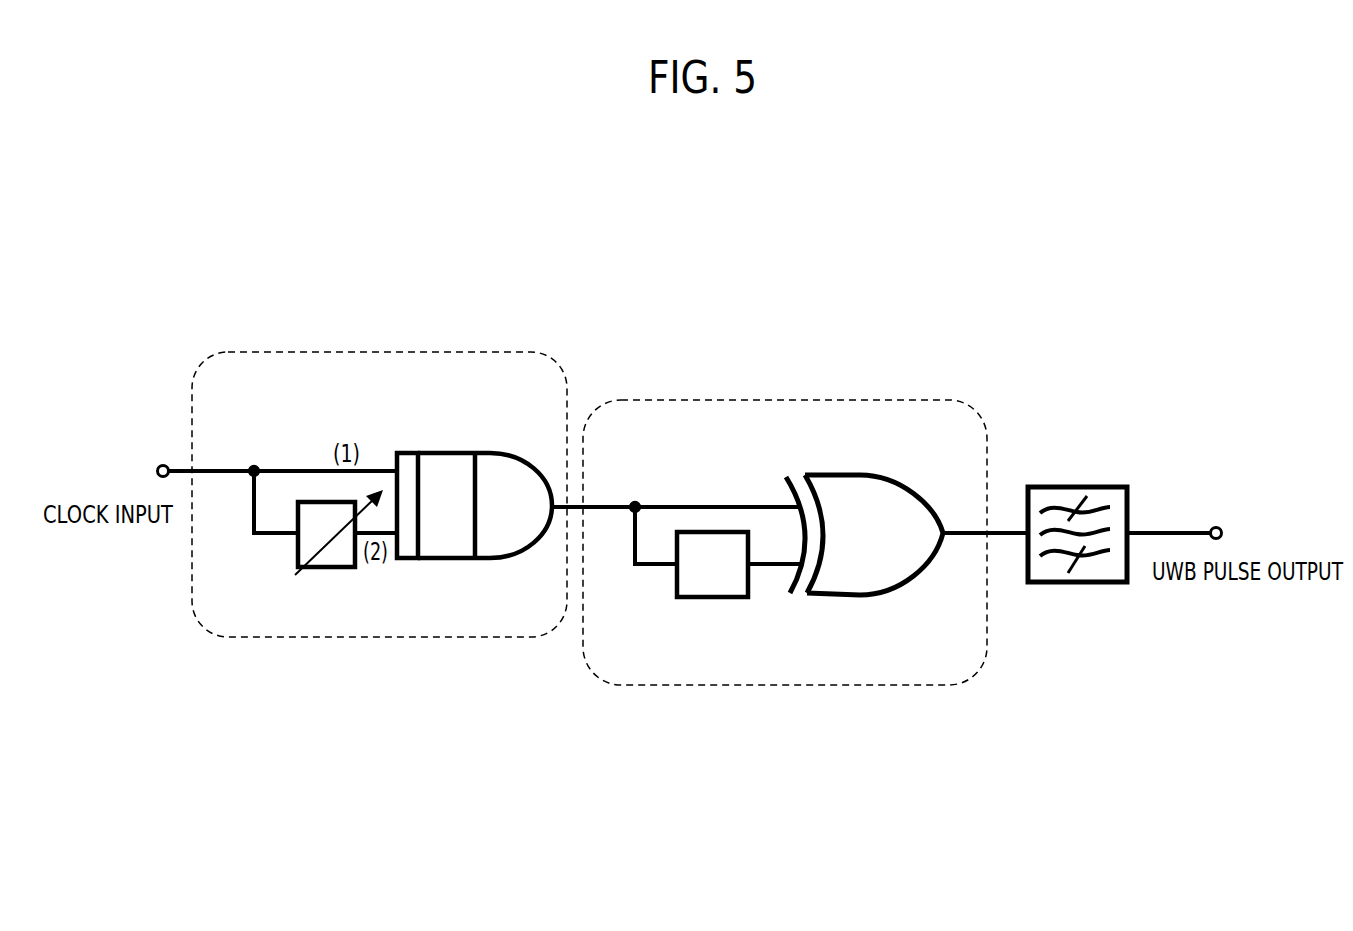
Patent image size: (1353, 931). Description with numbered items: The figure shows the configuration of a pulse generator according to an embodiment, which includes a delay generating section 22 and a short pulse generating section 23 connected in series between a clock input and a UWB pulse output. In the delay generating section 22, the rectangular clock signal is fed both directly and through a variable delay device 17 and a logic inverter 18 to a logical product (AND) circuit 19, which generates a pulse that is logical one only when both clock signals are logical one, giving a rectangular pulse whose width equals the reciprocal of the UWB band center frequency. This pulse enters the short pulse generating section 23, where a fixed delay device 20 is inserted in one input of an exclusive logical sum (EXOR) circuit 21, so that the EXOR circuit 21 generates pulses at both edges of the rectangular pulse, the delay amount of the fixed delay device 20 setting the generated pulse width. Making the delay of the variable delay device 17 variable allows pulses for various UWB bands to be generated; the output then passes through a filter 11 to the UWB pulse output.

The band-pass filter 11 is at (1075, 487).
The variable delay device 17 is at (335, 552).
The logic inverter 18 is at (407, 535).
The logical product (AND) circuit 19 is at (502, 535).
The fixed delay device 20 is at (695, 532).
The exclusive logical sum (EXOR) circuit 21 is at (898, 563).
The delay generating section 22 is at (370, 352).
The short pulse generating section 23 is at (773, 400).